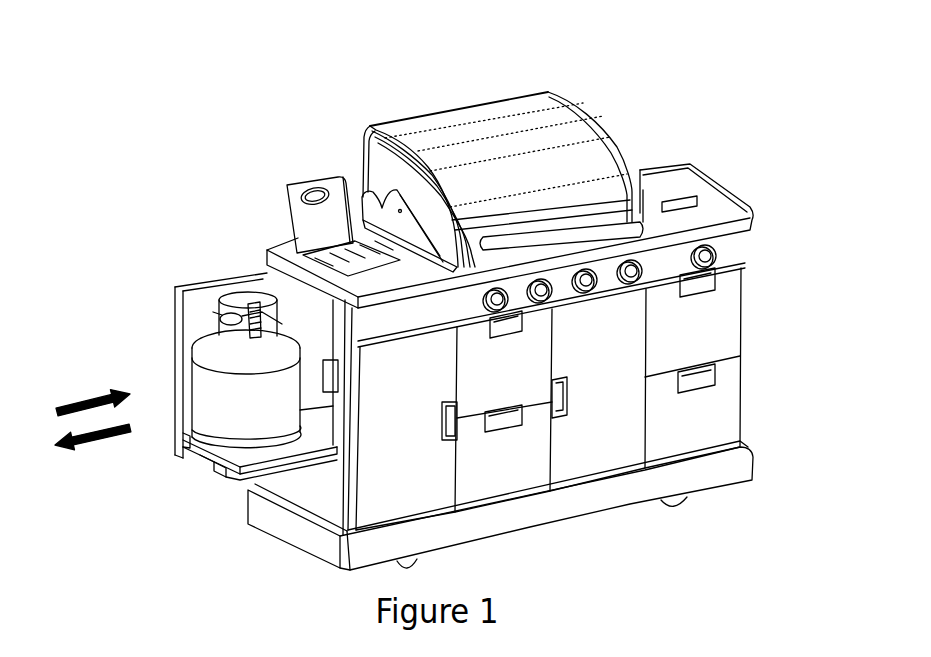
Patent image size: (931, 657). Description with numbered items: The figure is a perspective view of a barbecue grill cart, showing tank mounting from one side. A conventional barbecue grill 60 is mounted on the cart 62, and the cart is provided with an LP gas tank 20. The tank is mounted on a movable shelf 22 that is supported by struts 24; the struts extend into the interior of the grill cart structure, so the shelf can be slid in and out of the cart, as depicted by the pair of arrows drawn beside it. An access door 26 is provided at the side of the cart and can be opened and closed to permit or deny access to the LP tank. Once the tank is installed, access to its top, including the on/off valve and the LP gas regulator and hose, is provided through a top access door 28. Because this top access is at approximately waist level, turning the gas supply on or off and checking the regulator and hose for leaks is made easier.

The LP gas tank 20 is at (217, 412).
The movable shelf 22 is at (223, 463).
The struts 24 is at (273, 453).
The access door 26 is at (202, 290).
The top access door 28 is at (296, 192).
The barbecue grill 60 is at (524, 112).
The cart 62 is at (747, 407).